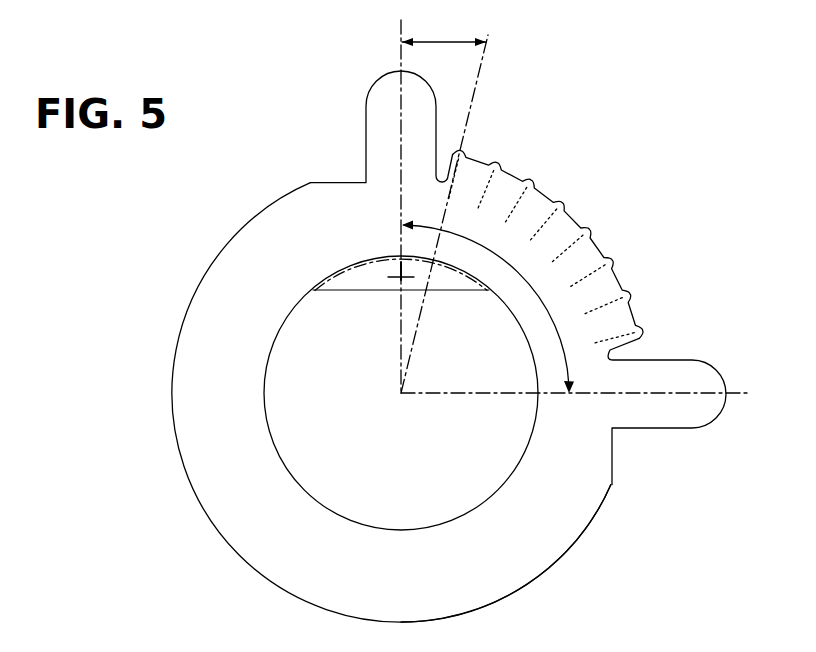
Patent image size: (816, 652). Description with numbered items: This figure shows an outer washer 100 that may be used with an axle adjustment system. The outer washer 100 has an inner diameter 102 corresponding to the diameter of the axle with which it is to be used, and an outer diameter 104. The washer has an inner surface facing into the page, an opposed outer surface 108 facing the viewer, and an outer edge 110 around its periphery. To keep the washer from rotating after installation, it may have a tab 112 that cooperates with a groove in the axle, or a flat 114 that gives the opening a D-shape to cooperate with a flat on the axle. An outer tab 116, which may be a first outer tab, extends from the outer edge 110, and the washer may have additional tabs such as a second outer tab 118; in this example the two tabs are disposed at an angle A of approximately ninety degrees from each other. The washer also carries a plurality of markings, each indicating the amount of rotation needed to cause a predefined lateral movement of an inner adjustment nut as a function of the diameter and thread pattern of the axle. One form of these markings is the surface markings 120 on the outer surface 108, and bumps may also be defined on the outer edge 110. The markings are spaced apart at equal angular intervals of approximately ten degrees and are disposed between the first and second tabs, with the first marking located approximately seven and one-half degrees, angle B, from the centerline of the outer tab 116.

The outer washer 100 is at (137, 307).
The inner diameter 102 is at (277, 448).
The outer diameter 104 is at (183, 475).
The outer surface 108 is at (524, 550).
The outer edge 110 is at (558, 565).
The tab 112 is at (388, 268).
The flat 114 is at (462, 297).
The outer tab 116 is at (382, 112).
The second outer tab 118 is at (695, 377).
The surface markings 120 is at (500, 188).